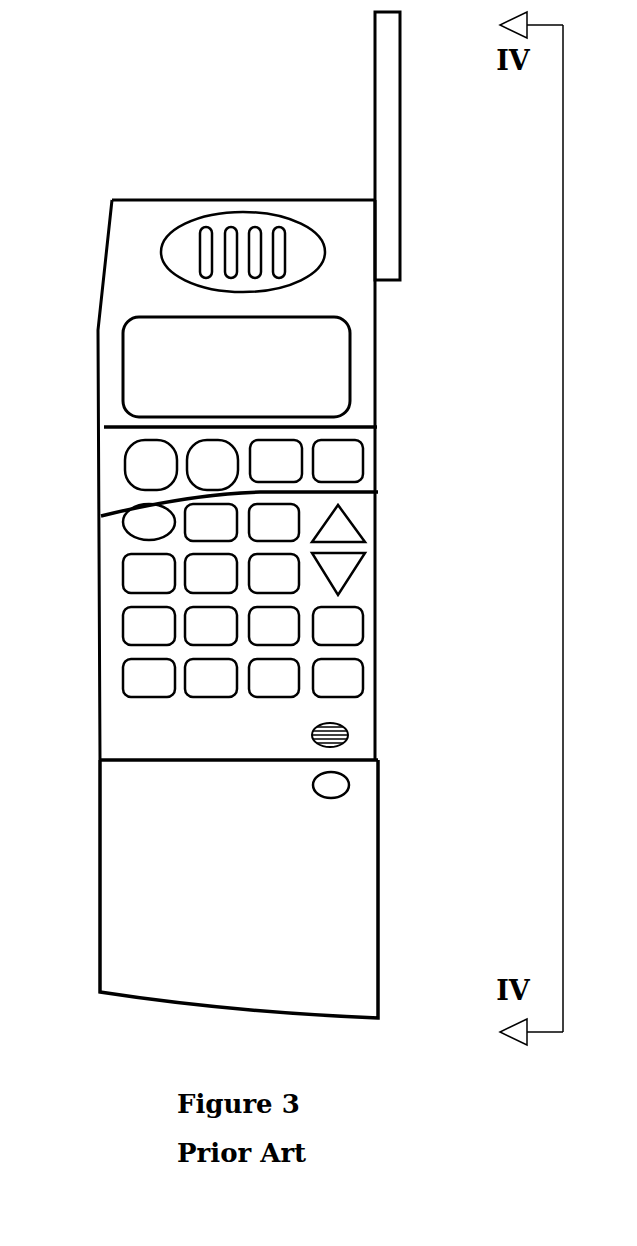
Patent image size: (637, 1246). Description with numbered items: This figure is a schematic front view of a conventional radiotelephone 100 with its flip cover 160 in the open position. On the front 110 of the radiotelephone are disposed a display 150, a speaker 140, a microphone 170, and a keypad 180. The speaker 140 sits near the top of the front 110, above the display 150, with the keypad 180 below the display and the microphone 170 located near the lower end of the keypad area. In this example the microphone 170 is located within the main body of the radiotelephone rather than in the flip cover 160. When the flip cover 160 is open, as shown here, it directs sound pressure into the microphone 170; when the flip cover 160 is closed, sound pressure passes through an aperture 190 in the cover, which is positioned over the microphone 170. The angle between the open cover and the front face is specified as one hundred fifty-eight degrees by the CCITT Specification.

The radiotelephone 100 is at (77, 453).
The front face 110 is at (127, 745).
The speaker 140 is at (301, 240).
The display 150 is at (338, 355).
The flip cover 160 is at (275, 887).
The microphone 170 is at (337, 725).
The keypad 180 is at (338, 528).
The aperture 190 is at (338, 765).